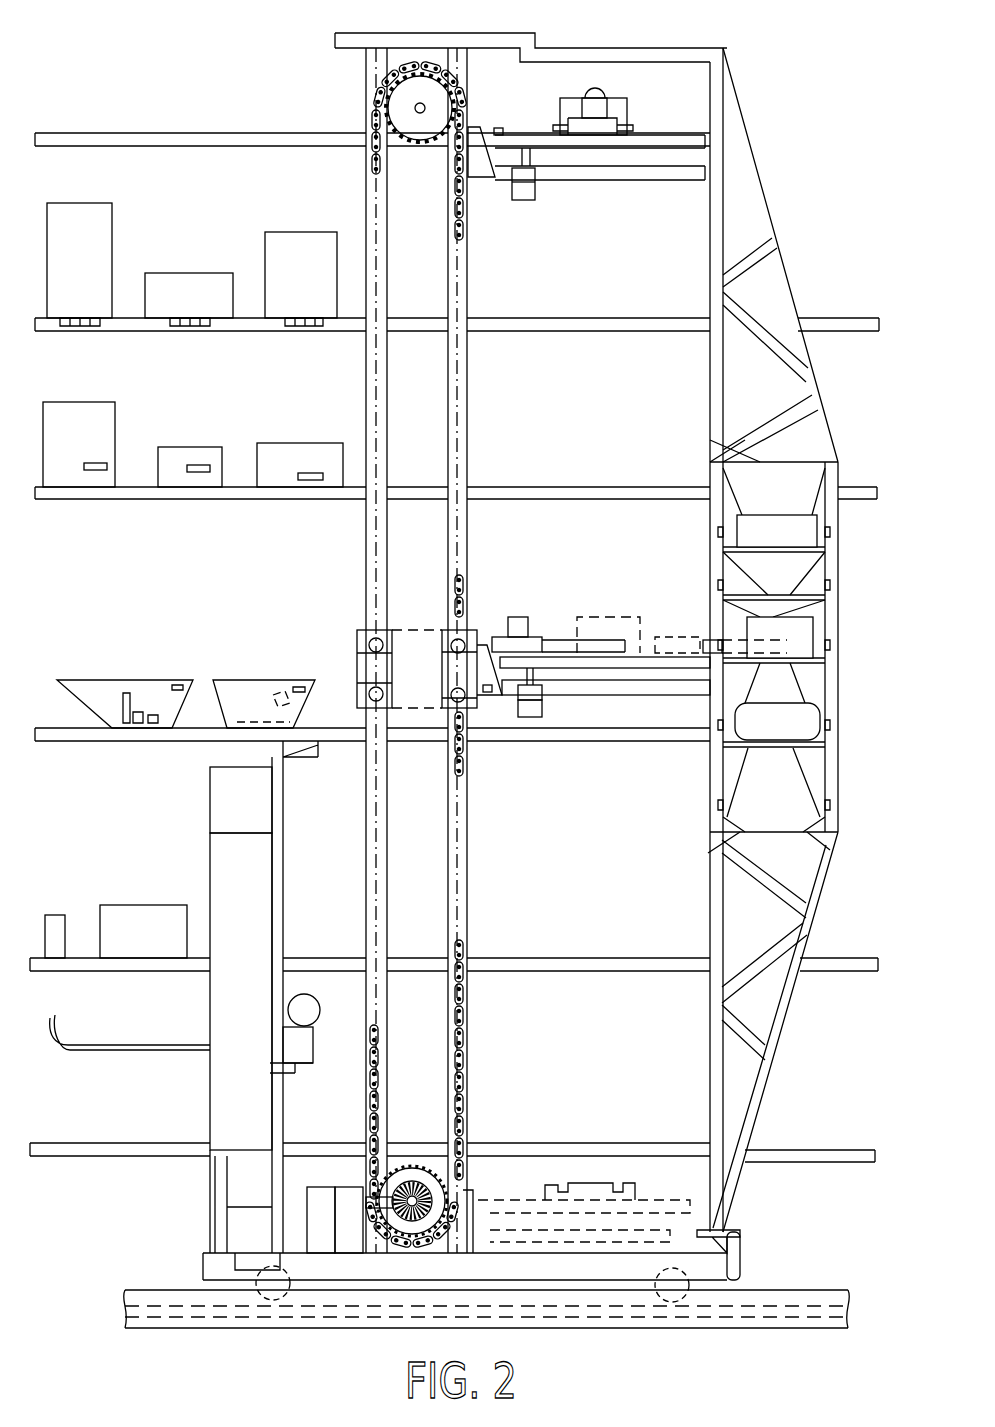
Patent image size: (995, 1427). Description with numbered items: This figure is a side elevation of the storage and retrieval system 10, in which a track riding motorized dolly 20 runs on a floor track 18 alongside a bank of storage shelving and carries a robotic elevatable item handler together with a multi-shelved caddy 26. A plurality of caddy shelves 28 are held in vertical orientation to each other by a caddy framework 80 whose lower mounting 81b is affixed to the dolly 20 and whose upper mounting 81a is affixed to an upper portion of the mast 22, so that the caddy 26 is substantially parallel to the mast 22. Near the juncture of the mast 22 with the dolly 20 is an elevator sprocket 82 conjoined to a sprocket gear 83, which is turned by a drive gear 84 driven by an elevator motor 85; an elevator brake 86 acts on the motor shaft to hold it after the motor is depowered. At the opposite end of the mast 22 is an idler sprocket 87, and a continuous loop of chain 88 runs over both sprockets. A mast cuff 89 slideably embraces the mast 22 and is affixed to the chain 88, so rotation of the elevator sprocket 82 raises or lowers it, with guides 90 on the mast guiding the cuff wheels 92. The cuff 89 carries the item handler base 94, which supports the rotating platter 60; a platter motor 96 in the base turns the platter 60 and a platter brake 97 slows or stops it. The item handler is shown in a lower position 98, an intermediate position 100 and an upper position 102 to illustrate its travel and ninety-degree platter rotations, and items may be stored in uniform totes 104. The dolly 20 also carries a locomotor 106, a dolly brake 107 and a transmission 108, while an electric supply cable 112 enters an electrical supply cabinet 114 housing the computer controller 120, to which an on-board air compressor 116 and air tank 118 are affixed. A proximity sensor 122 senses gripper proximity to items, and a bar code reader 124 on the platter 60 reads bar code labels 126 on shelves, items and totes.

The storage and retrieval system 10 is at (285, 1273).
The floor rail 18 is at (175, 1300).
The dolly 20 is at (708, 1273).
The mast 22 is at (405, 386).
The caddy 26 is at (720, 455).
The caddy shelves 28 is at (832, 592).
The rotating platter 60 is at (602, 668).
The caddy framework 80 is at (775, 237).
The upper mounting 81a is at (548, 46).
The lower mounting 81b is at (727, 1230).
The elevator sprocket 82 is at (403, 1163).
The sprocket gear 83 is at (433, 1193).
The drive gear 84 is at (403, 1220).
The elevator motor 85 is at (345, 1188).
The elevator brake 86 is at (312, 1207).
The idler sprocket 87 is at (421, 100).
The continuous loop of chain 88 is at (372, 92).
The mast cuff 89 is at (357, 633).
The guides 90 is at (457, 825).
The cuff wheels 92 is at (366, 672).
The item handler base 94 is at (637, 695).
The platter motor 96 is at (535, 697).
The platter brake 97 is at (527, 718).
The lower position 98 is at (623, 1170).
The intermediate position 100 is at (591, 603).
The upper position 102 is at (668, 115).
The uniform totes 104 is at (250, 690).
The locomotor 106 is at (235, 1234).
The dolly brake 107 is at (237, 1183).
The transmission 108 is at (235, 1256).
The electric supply cable 112 is at (85, 1052).
The electrical supply cabinet 114 is at (228, 910).
The on-board air compressor 116 is at (300, 1062).
The air tank 118 is at (307, 1000).
The computer controller 120 is at (228, 790).
The proximity sensor 122 is at (675, 652).
The bar code reader 124 is at (497, 128).
The bar code labels 126 is at (315, 330).